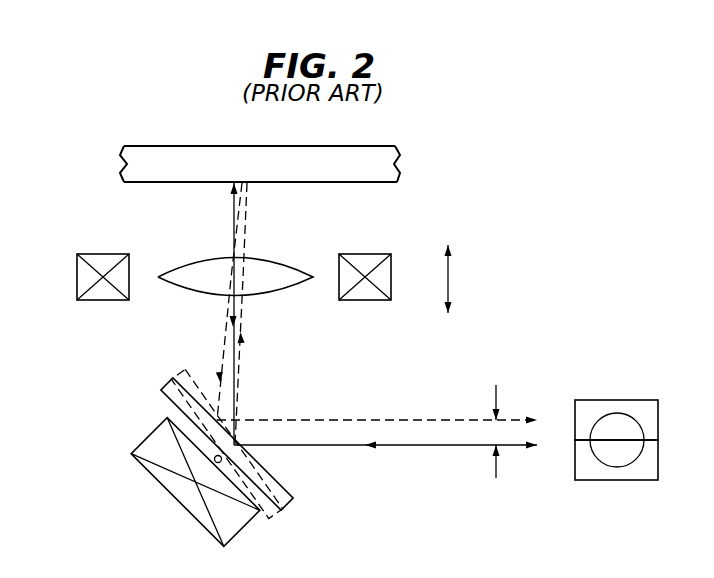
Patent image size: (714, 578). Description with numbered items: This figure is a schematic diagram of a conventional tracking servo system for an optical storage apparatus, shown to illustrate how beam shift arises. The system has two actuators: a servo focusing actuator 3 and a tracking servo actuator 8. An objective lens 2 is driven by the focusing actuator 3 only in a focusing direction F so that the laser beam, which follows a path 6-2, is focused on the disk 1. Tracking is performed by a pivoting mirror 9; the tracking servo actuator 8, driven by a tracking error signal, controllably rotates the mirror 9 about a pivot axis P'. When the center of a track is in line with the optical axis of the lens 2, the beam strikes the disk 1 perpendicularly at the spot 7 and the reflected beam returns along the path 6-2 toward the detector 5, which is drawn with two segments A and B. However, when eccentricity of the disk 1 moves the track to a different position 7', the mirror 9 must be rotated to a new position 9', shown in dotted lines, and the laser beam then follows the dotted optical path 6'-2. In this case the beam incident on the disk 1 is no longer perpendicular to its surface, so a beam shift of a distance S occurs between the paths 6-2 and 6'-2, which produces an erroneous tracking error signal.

The disk 1 is at (399, 165).
The objective lens 2 is at (281, 289).
The servo focusing actuator 3 is at (117, 300).
The split photodetector 5 is at (621, 461).
The path of the laser beam 6-2 is at (415, 447).
The optical path of the laser beam with mirror rotated 6'-2 is at (377, 403).
The beam spot on disc 7 is at (234, 301).
The different track position 7' is at (238, 301).
The tracking servo actuator 8 is at (140, 460).
The pivoting mirror 9 is at (204, 444).
The new position of the mirror 9' is at (226, 431).
The pivot axis P' is at (245, 501).
The beam shift distance S is at (495, 431).
The detector segment A is at (625, 420).
The detector segment B is at (625, 460).
The focusing direction F is at (454, 273).